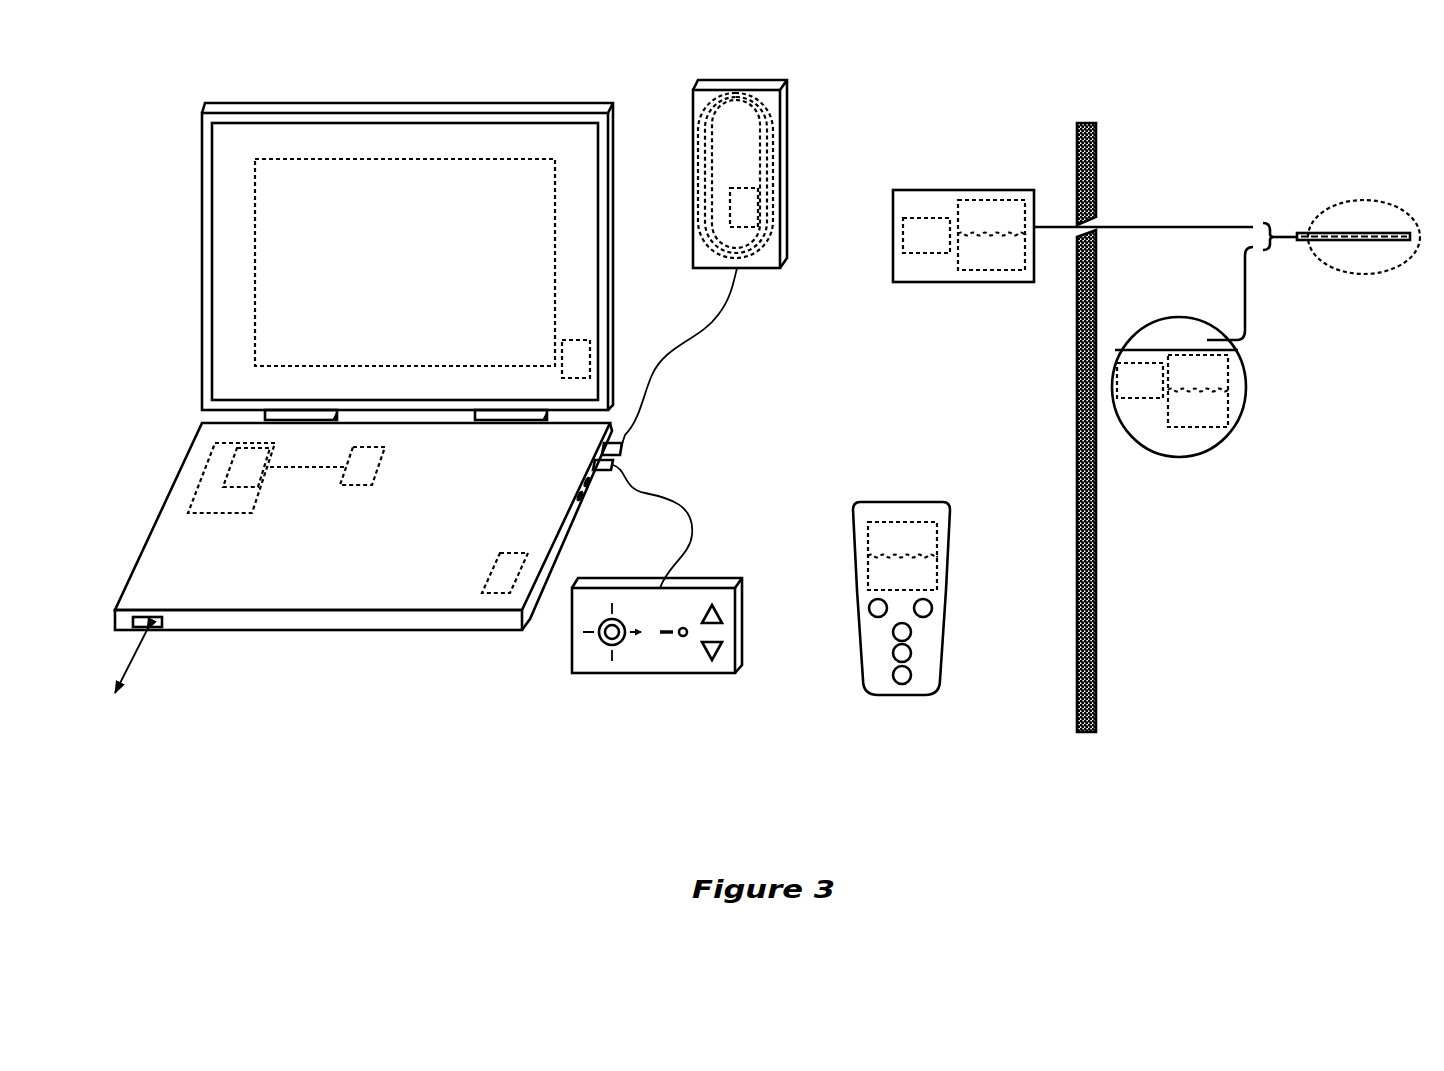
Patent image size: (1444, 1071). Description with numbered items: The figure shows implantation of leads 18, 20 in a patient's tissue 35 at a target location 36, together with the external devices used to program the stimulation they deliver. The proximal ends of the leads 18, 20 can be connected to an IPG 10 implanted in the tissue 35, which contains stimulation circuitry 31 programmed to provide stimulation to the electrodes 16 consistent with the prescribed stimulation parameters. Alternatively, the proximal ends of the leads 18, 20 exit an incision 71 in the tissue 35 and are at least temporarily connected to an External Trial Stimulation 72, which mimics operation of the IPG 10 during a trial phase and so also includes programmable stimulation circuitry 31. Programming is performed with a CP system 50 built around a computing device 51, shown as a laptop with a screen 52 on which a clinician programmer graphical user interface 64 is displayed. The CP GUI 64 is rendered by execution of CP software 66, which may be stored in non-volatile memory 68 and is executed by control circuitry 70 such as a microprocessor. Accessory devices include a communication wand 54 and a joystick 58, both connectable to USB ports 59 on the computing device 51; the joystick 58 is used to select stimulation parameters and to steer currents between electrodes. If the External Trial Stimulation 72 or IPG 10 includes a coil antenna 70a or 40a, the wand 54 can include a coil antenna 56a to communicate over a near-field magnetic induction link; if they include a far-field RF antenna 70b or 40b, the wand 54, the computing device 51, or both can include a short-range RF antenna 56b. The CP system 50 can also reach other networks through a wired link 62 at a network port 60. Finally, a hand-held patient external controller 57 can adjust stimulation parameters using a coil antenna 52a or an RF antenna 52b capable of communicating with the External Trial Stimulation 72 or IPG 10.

The CP system 50 is at (297, 48).
The computing device 51 is at (347, 650).
The screen 52 is at (237, 208).
The communication wand 54 is at (712, 52).
The coil antenna 56a is at (703, 118).
The short-range RF antenna 56b is at (580, 338).
The patient external controller 57 is at (957, 575).
The joystick 58 is at (697, 553).
The USB ports 59 is at (597, 483).
The network port 60 is at (147, 617).
The wired link 62 is at (143, 661).
The clinician programmer graphical user interface 64 is at (463, 162).
The CP software 66 is at (248, 467).
The non-volatile memory 68 is at (217, 508).
The control circuitry 70 is at (372, 465).
The coil antenna 70a is at (991, 235).
The far-field RF antenna 70b is at (992, 251).
The External Trial Stimulation 72 is at (978, 182).
The stimulation circuitry 31 is at (1033, 308).
The patient's tissue 35 is at (1088, 123).
The incision 71 is at (1072, 240).
The lead 18 is at (1217, 281).
The lead 20 is at (1243, 290).
The electrodes 16 is at (1353, 255).
The target location 36 is at (1347, 200).
The IPG 10 is at (1228, 463).
The coil antenna 40a is at (1198, 391).
The far-field RF antenna 40b is at (1198, 406).
The coil antenna 52a is at (902, 556).
The RF antenna 52b is at (902, 572).